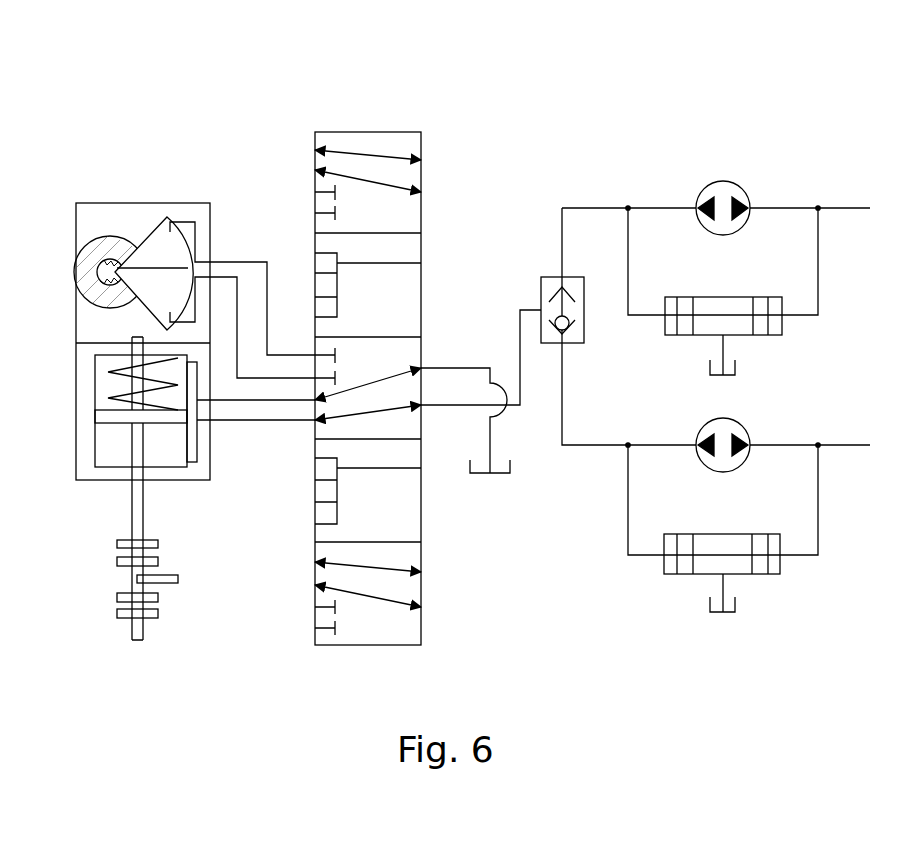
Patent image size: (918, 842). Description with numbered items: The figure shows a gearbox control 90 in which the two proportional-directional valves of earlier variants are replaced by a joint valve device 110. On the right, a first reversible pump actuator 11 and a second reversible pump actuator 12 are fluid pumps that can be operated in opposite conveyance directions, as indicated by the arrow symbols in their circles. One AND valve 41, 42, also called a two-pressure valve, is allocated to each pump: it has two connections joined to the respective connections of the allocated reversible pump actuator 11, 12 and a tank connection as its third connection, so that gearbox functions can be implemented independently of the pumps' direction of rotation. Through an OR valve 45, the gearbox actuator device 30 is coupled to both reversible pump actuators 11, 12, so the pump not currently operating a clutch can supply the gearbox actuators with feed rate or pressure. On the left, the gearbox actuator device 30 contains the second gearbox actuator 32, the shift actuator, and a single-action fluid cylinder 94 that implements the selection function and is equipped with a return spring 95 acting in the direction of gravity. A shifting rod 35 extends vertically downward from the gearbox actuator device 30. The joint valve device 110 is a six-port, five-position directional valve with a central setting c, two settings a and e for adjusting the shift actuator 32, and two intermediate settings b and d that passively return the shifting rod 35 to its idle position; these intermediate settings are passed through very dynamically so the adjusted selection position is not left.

The gearbox control 90 is at (526, 86).
The gearbox actuator device 30 is at (96, 200).
The second gearbox actuator 32 is at (138, 203).
The single-action fluid cylinder 94 is at (107, 467).
The return spring 95 is at (108, 372).
The shifting rod 35 is at (138, 641).
The joint valve device 110 is at (366, 124).
The OR valve 45 is at (541, 297).
The first reversible pump actuator 11 is at (720, 181).
The second reversible pump actuator 12 is at (745, 425).
The AND valve 41 is at (782, 330).
The AND valve 42 is at (780, 572).